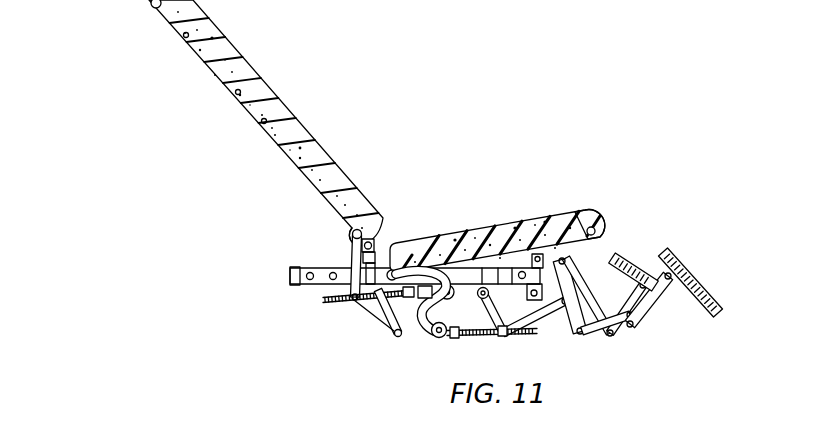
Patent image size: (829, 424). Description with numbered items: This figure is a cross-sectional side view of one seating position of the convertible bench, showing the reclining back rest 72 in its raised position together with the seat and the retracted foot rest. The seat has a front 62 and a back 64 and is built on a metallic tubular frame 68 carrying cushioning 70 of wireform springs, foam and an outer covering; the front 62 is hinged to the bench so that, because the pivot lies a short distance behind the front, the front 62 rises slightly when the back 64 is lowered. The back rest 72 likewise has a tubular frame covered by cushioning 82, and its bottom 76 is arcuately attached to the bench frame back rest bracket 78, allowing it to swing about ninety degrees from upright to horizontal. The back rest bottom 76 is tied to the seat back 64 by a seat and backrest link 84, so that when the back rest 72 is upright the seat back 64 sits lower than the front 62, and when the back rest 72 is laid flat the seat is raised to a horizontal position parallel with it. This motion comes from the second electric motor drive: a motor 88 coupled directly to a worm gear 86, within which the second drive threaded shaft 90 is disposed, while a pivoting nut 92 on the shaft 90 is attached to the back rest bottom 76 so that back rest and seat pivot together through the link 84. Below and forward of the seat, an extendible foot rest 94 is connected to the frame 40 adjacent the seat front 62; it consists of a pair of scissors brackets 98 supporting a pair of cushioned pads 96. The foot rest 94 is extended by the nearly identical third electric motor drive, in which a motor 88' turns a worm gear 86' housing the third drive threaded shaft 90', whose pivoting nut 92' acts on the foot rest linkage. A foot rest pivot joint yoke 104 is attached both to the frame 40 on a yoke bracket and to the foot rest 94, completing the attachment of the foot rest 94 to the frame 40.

The frame 40 is at (288, 275).
The seat front 62 is at (595, 210).
The seat back 64 is at (397, 245).
The metallic tubular frame 68 is at (585, 209).
The cushioning 70 is at (500, 228).
The reclining back rest 72 is at (290, 84).
The back rest bottom 76 is at (348, 220).
The bench frame back rest bracket 78 is at (376, 248).
The cushioning 82 is at (183, 38).
The seat and backrest link 84 is at (390, 328).
The worm gear 86 is at (346, 334).
The worm gear 86' is at (479, 347).
The motor 88 is at (438, 253).
The motor 88' is at (383, 365).
The second drive threaded shaft 90 is at (296, 308).
The third drive threaded shaft 90' is at (532, 361).
The pivoting nut 92 is at (319, 321).
The pivoting nut 92' is at (570, 368).
The extendible foot rest 94 is at (702, 258).
The cushioned pad 96 is at (627, 260).
The scissors bracket 98 is at (608, 337).
The foot rest pivot joint yoke 104 is at (565, 262).